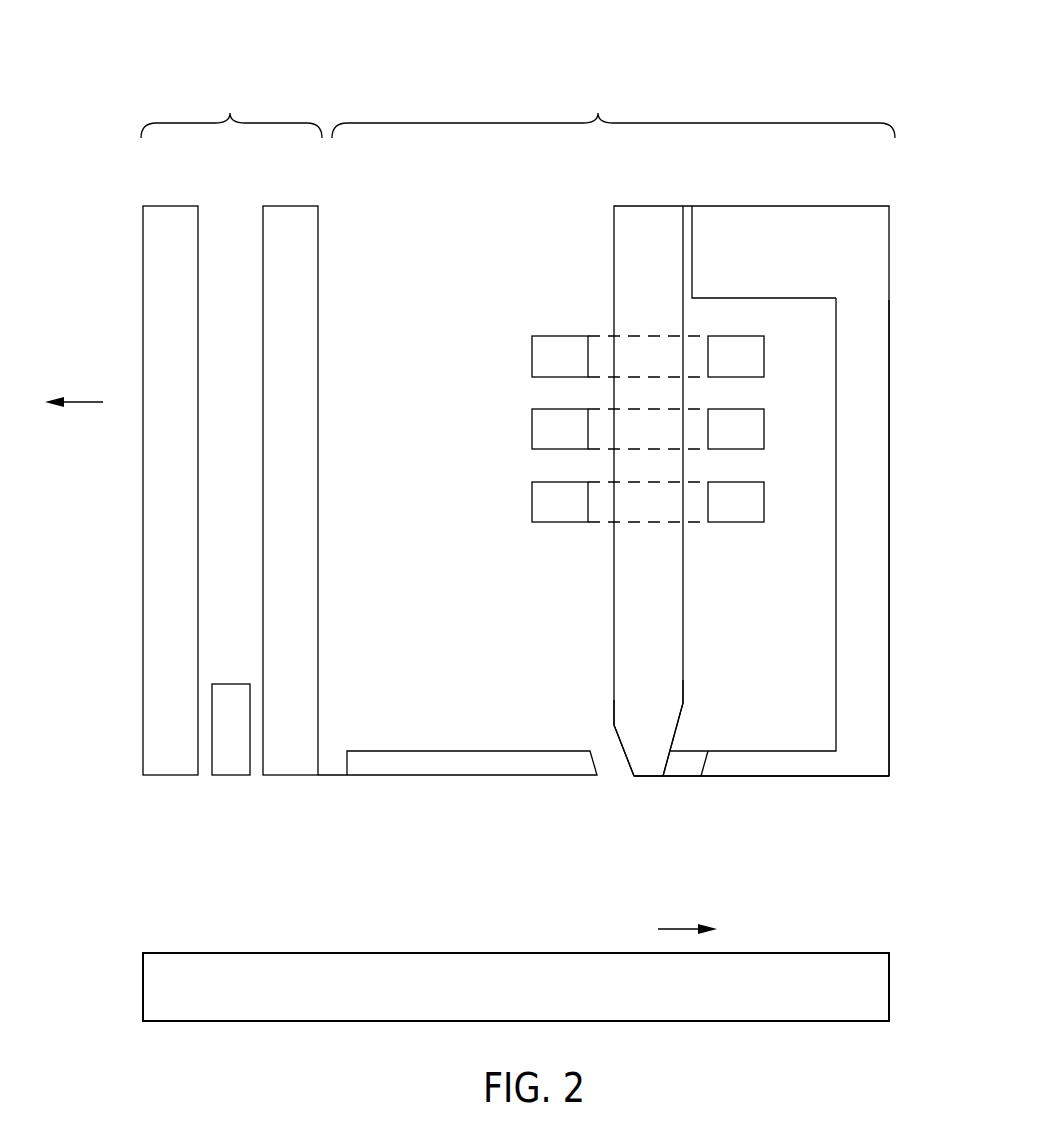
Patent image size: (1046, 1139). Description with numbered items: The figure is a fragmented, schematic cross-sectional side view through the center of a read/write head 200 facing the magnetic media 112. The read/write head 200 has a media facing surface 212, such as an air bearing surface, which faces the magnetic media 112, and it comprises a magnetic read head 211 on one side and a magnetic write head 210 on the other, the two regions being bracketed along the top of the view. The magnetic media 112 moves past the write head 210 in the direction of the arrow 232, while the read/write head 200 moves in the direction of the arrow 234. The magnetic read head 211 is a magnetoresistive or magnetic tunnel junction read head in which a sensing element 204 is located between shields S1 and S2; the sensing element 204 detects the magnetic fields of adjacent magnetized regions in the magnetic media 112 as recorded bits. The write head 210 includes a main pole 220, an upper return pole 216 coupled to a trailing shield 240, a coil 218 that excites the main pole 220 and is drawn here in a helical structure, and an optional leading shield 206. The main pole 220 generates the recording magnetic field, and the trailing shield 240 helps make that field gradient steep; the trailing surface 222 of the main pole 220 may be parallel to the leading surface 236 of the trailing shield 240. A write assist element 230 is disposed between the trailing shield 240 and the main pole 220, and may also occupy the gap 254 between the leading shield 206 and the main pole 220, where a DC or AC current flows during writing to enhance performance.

The read/write head 200 is at (132, 25).
The magnetic read head 211 is at (231, 110).
The magnetic write head 210 is at (613, 429).
The return pole 216 is at (868, 258).
The leading surface 236 is at (836, 603).
The trailing shield 240 is at (889, 735).
The media facing surface 212 is at (826, 777).
The write assist element 230 is at (687, 765).
The main pole 220 is at (627, 730).
The trailing surface 222 is at (683, 686).
The gap 254 is at (613, 773).
The coil 218 is at (557, 522).
The MR shield S1 is at (163, 779).
The MR sensing element 204 is at (232, 778).
The MR shield S2 is at (292, 778).
The leading shield 206 is at (394, 778).
The arrow 234 is at (85, 402).
The arrow 232 is at (676, 929).
The magnetic media 112 is at (889, 984).